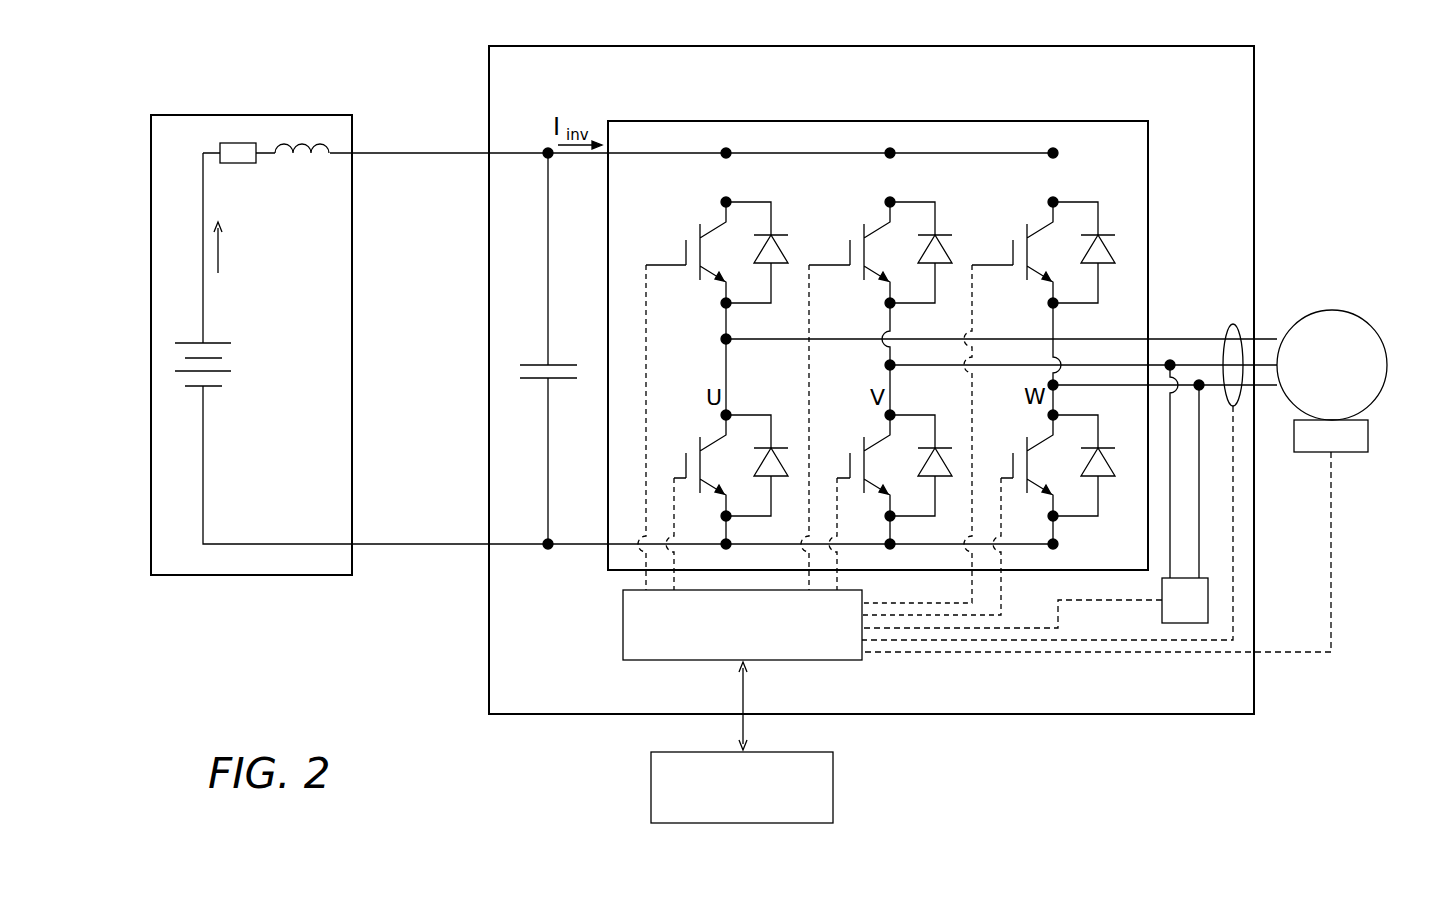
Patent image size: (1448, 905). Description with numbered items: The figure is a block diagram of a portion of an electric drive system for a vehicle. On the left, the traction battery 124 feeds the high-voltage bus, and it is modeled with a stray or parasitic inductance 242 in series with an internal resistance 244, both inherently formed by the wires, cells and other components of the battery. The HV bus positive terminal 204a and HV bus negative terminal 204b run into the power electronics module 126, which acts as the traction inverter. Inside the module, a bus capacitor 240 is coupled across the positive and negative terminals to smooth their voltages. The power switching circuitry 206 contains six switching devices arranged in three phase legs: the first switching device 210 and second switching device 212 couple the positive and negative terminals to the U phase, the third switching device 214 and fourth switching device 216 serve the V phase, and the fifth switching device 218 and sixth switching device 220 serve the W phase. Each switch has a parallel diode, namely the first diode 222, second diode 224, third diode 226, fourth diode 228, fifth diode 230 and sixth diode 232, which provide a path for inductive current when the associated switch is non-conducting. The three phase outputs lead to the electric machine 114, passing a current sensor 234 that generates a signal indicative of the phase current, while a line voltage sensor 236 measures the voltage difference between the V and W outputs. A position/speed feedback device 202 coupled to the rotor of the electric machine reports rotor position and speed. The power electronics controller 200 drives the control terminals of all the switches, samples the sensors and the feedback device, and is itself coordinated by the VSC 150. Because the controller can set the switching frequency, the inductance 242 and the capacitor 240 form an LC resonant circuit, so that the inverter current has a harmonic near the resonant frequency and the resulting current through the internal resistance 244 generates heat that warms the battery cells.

The electric machine 114 is at (1332, 310).
The traction battery 124 is at (151, 133).
The power electronics module 126 is at (1254, 82).
The VSC 150 is at (651, 770).
The power electronics controller 200 is at (623, 610).
The position/speed feedback device 202 is at (1368, 445).
The HV bus positive terminal 204a is at (435, 151).
The HV bus negative terminal 204b is at (433, 546).
The power switching circuitry 206 is at (1148, 145).
The first switching device S1 210 is at (700, 237).
The second switching device S2 212 is at (700, 450).
The third switching device S3 214 is at (864, 237).
The fourth switching device S4 216 is at (864, 450).
The fifth switching device S5 218 is at (1027, 237).
The sixth switching device S6 220 is at (1027, 450).
The first diode 222 is at (783, 233).
The second diode 224 is at (780, 446).
The third diode 226 is at (946, 234).
The fourth diode 228 is at (943, 446).
The fifth diode 230 is at (1109, 234).
The sixth diode 232 is at (1110, 446).
The current sensor 234 is at (1233, 325).
The line voltage sensor 236 is at (1208, 598).
The bus capacitor 240 is at (533, 363).
The stray/parasitic inductance 242 is at (302, 143).
The internal resistance 244 is at (228, 143).